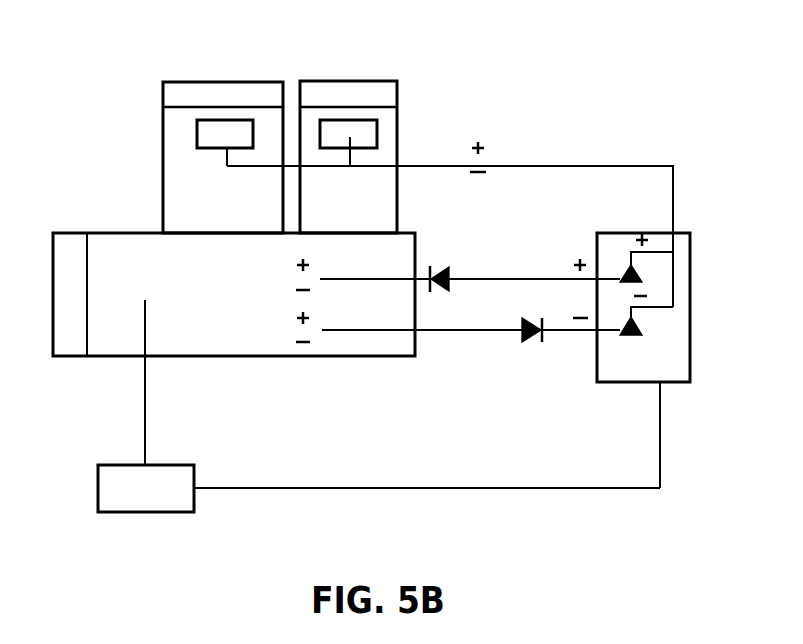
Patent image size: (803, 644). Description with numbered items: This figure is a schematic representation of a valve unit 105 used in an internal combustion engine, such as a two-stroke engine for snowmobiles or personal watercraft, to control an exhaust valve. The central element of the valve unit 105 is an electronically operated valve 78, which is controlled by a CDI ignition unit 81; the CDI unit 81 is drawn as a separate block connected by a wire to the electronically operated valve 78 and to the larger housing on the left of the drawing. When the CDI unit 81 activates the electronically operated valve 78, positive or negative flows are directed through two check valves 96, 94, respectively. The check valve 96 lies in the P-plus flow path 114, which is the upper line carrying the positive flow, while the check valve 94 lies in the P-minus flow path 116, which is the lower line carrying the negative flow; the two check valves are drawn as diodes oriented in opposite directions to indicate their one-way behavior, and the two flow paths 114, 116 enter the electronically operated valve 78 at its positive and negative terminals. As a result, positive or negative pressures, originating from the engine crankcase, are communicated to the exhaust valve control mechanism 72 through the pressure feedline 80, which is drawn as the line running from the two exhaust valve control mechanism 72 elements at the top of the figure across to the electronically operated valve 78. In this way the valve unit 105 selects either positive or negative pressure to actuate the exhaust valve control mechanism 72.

The exhaust valve control mechanism 72 is at (202, 131).
The electronically operated valve 78 is at (692, 293).
The pressure feedline 80 is at (450, 212).
The CDI ignition unit 81 is at (107, 486).
The check valve 94 is at (525, 339).
The check valve 96 is at (439, 265).
The valve unit 105 is at (571, 81).
The P+ flow path 114 is at (538, 276).
The P- flow path 116 is at (572, 334).